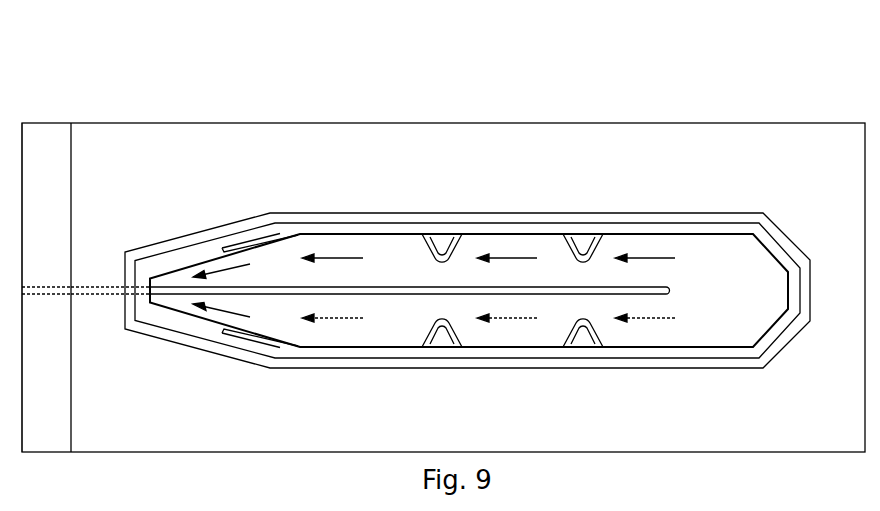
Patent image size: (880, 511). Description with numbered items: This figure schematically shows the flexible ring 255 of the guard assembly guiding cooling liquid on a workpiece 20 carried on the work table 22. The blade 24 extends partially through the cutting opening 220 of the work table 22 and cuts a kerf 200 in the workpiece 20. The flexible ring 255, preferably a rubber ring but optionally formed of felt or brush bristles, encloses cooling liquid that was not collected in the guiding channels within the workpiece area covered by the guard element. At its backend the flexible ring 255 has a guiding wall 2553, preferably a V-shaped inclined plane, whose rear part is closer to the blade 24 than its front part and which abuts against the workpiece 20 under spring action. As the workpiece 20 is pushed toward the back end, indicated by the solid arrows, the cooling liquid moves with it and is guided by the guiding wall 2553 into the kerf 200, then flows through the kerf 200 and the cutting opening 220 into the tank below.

The workpiece 20 is at (570, 145).
The work table 22 is at (43, 148).
The cutting opening 220 is at (40, 297).
The kerf 200 is at (98, 297).
The blade 24 is at (373, 292).
The flexible ring 255 is at (658, 218).
The guiding wall 2553 is at (180, 312).